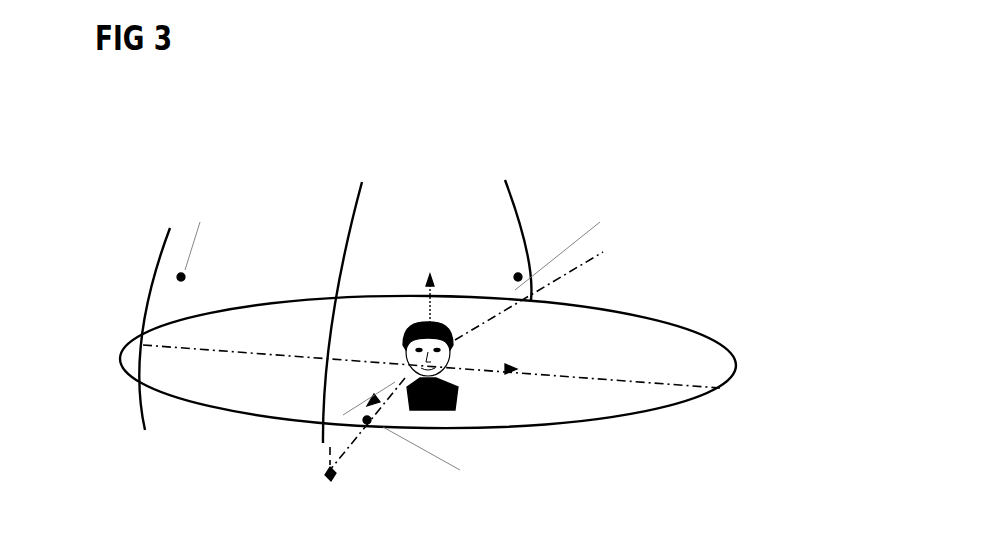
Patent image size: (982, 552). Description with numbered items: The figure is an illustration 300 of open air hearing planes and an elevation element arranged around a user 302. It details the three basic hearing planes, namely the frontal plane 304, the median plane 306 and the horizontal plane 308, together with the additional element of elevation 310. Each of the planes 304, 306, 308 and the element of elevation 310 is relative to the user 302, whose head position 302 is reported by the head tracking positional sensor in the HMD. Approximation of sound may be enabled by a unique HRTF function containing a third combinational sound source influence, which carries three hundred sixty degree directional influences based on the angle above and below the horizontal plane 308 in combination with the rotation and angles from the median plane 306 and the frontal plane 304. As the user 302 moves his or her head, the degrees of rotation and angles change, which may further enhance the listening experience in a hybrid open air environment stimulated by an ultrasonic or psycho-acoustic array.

The illustration 300 is at (734, 99).
The user 302 is at (437, 338).
The frontal plane 304 is at (195, 192).
The median plane 306 is at (596, 190).
The horizontal plane 308 is at (658, 478).
The element of elevation 310 is at (350, 513).